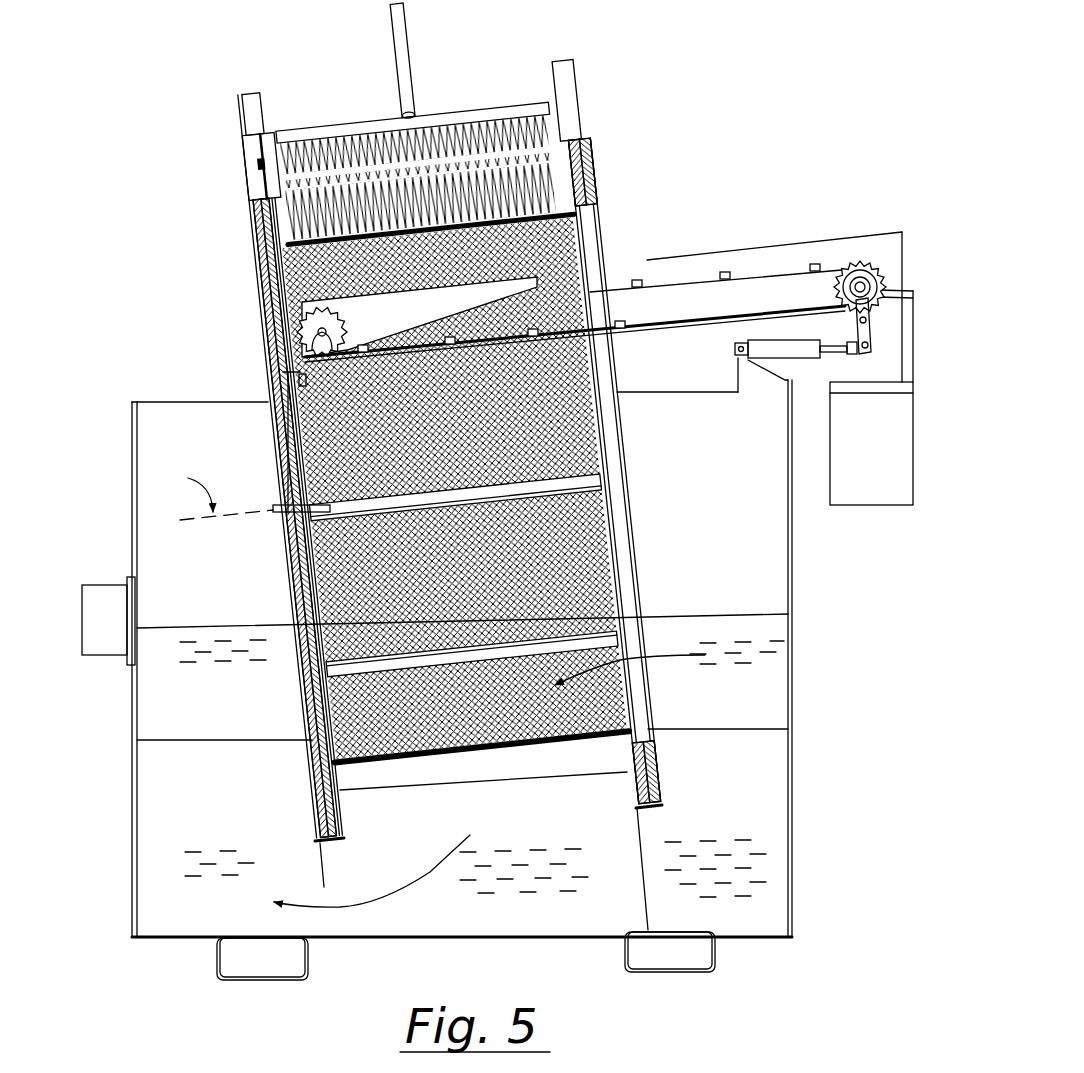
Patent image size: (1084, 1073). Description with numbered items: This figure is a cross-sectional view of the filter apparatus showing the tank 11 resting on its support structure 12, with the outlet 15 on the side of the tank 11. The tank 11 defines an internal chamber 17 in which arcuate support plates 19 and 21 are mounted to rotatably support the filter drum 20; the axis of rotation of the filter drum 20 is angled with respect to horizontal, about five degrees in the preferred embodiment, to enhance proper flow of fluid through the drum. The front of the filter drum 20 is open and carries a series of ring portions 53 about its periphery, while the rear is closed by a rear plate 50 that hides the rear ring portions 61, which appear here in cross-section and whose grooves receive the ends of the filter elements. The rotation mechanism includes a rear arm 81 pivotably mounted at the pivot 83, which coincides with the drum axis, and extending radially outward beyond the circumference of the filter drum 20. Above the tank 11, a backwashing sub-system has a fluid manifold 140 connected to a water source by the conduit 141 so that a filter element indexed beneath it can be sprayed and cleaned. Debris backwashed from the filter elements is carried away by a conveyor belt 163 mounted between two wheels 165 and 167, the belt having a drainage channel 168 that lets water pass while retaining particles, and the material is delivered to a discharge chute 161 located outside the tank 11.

The tank 11 is at (134, 718).
The support structure 12 is at (308, 963).
The outlet 15 is at (103, 585).
The internal chamber 17 is at (790, 823).
The support plate 19 is at (640, 810).
The filter drum 20 is at (251, 250).
The support plate 21 is at (333, 842).
The rear plate 50 is at (265, 310).
The ring portion 53 is at (582, 140).
The rear ring portion 61 is at (338, 797).
The rear arm 81 is at (250, 213).
The pivot 83 is at (273, 515).
The fluid manifold 140 is at (362, 122).
The conduit 141 is at (392, 40).
The discharge chute 161 is at (855, 505).
The conveyor belt 163 is at (613, 286).
The wheel 165 is at (290, 352).
The wheel 167 is at (862, 263).
The drainage channel 168 is at (638, 333).